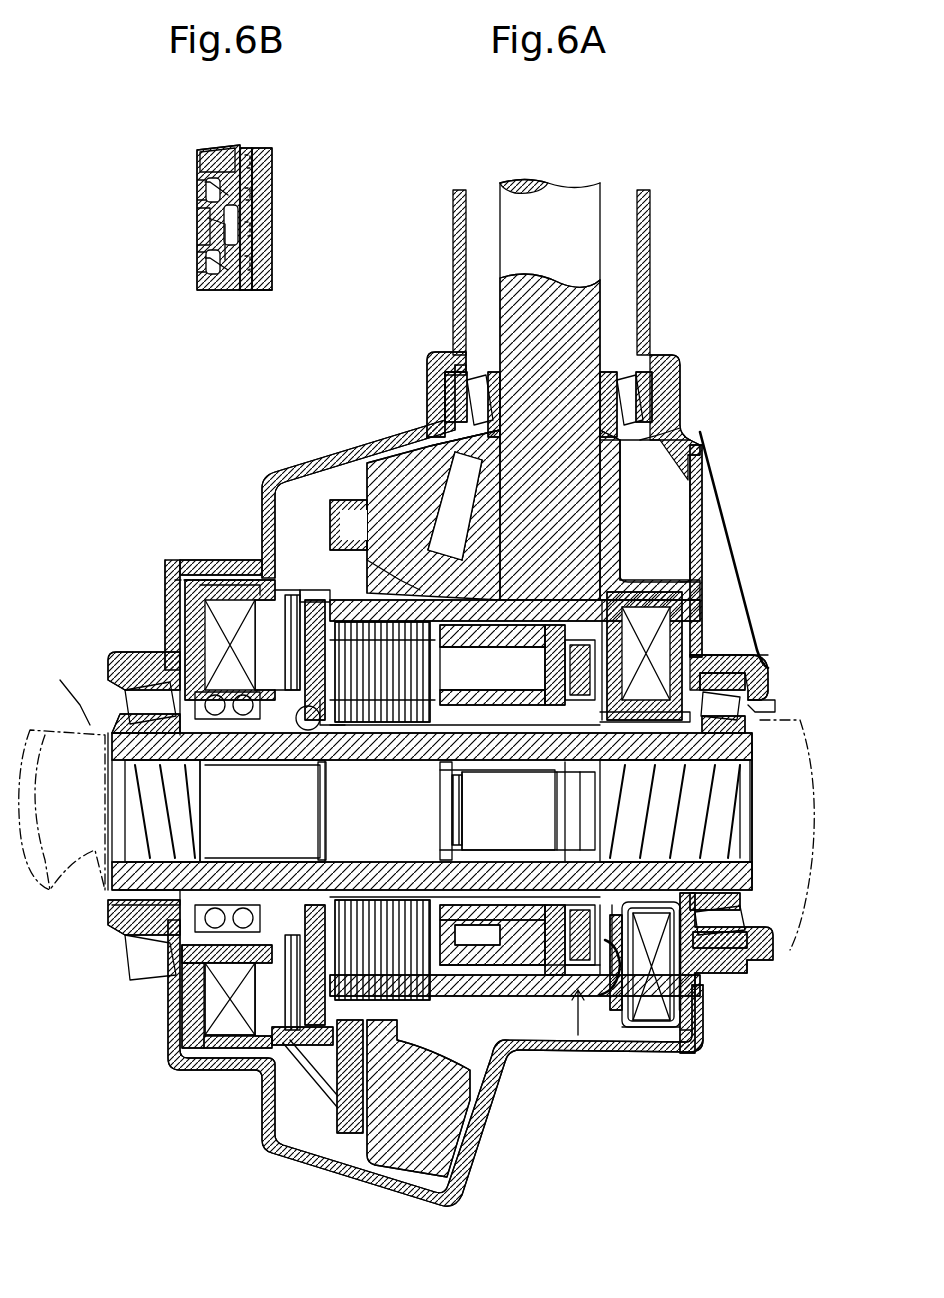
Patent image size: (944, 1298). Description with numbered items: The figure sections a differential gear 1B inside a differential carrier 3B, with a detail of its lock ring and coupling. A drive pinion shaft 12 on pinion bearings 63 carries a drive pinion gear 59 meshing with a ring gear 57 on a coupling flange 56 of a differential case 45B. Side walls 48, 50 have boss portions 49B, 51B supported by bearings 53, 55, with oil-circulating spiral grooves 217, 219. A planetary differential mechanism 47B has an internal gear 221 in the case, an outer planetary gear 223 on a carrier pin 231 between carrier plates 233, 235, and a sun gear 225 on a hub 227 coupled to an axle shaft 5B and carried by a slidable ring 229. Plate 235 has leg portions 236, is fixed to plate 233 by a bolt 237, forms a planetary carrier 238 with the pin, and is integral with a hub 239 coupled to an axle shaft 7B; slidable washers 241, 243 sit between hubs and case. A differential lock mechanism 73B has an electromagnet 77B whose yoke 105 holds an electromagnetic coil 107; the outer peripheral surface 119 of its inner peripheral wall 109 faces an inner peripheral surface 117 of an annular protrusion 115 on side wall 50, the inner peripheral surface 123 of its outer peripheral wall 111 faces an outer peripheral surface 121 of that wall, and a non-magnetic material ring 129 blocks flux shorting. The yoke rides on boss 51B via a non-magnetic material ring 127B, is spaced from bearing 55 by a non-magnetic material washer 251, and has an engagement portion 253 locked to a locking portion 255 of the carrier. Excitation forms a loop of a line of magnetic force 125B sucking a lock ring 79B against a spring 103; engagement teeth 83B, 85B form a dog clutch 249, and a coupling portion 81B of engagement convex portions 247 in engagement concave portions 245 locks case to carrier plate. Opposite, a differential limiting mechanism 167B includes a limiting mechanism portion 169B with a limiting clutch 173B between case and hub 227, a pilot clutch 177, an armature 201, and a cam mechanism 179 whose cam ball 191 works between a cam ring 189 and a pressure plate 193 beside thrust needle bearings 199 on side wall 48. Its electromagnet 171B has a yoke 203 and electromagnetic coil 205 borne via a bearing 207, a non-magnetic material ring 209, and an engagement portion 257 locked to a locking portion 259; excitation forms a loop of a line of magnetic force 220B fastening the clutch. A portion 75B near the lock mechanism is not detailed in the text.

In FIG. 6A, the differential gear 1B is at (700, 445).
In FIG. 6A, the differential carrier 3B is at (692, 357).
In FIG. 6A, the axle shaft 5B is at (90, 725).
In FIG. 6A, the axle shaft 7B is at (775, 725).
In FIG. 6A, the drive pinion shaft 12 is at (583, 228).
In FIG. 6B, the differential case 45B is at (272, 225).
In FIG. 6A, the differential case 45B is at (540, 600).
In FIG. 6A, the differential mechanism 47B is at (595, 600).
In FIG. 6A, the side wall 48 is at (185, 610).
In FIG. 6A, the boss portion 49B is at (108, 733).
In FIG. 6A, the side wall 50 is at (705, 485).
In FIG. 6A, the boss portion 51B is at (760, 735).
In FIG. 6A, the bearing 53 is at (125, 655).
In FIG. 6A, the bearing 55 is at (757, 667).
In FIG. 6A, the coupling flange 56 is at (350, 450).
In FIG. 6A, the ring gear 57 is at (370, 465).
In FIG. 6A, the drive pinion gear 59 is at (455, 460).
In FIG. 6A, the pinion bearings 63 is at (658, 360).
In FIG. 6A, the differential lock mechanism 73B is at (612, 1050).
In FIG. 6A, the lower housing portion 75B is at (700, 1060).
In FIG. 6A, the electromagnet 77B is at (690, 605).
In FIG. 6B, the lock ring 79B is at (255, 150).
In FIG. 6A, the lock ring 79B is at (755, 745).
In FIG. 6B, the coupling portion 81B is at (205, 148).
In FIG. 6A, the coupling portion 81B is at (565, 1000).
In FIG. 6B, the engagement teeth 83B is at (250, 292).
In FIG. 6B, the engagement teeth 85B is at (265, 292).
In FIG. 6A, the spring 103 is at (745, 770).
In FIG. 6A, the yoke 105 is at (680, 627).
In FIG. 6A, the electromagnetic coil 107 is at (680, 643).
In FIG. 6A, the inner peripheral wall 109 is at (740, 685).
In FIG. 6A, the outer peripheral wall 111 is at (700, 470).
In FIG. 6A, the protrusion 115 is at (774, 945).
In FIG. 6A, the inner peripheral surface 117 is at (752, 878).
In FIG. 6A, the outer peripheral surface 119 is at (750, 968).
In FIG. 6A, the outer peripheral surface 121 is at (645, 1035).
In FIG. 6A, the inner peripheral surface 123 is at (670, 1035).
In FIG. 6A, the loop of a line of magnetic force 125B is at (682, 1000).
In FIG. 6A, the non-magnetic material ring 127B is at (748, 912).
In FIG. 6A, the non-magnetic material ring 129 is at (715, 990).
In FIG. 6A, the differential limiting mechanism 167B is at (310, 640).
In FIG. 6A, the limiting mechanism portion 169B is at (325, 600).
In FIG. 6A, the electromagnet 171B is at (225, 620).
In FIG. 6A, the limiting clutch 173B is at (382, 525).
In FIG. 6A, the pilot clutch 177 is at (285, 580).
In FIG. 6A, the cam mechanism 179 is at (310, 722).
In FIG. 6A, the cam ring 189 is at (295, 811).
In FIG. 6A, the cam ball 191 is at (452, 811).
In FIG. 6A, the pressure plate 193 is at (445, 780).
In FIG. 6A, the thrust needle bearings 199 is at (262, 811).
In FIG. 6A, the armature 201 is at (310, 585).
In FIG. 6A, the yoke 203 is at (240, 580).
In FIG. 6A, the electromagnetic coil 205 is at (235, 600).
In FIG. 6A, the bearing 207 is at (200, 690).
In FIG. 6A, the non-magnetic material ring 209 is at (255, 1040).
In FIG. 6A, the spiral groove 217 is at (108, 880).
In FIG. 6A, the spiral groove 219 is at (760, 856).
In FIG. 6A, the loop of a line of magnetic force 220B is at (290, 600).
In FIG. 6A, the internal gear 221 is at (625, 595).
In FIG. 6A, the outer planetary gear 223 is at (491, 814).
In FIG. 6A, the sun gear 225 is at (509, 811).
In FIG. 6A, the hub 227 is at (450, 722).
In FIG. 6A, the slidable ring 229 is at (262, 811).
In FIG. 6A, the carrier pin 231 is at (508, 600).
In FIG. 6A, the carrier plate 233 is at (372, 590).
In FIG. 6B, the carrier plate 235 is at (205, 160).
In FIG. 6A, the carrier plate 235 is at (492, 665).
In FIG. 6A, the leg portions 236 is at (525, 1050).
In FIG. 6A, the bolt 237 is at (447, 1130).
In FIG. 6A, the planetary carrier 238 is at (462, 455).
In FIG. 6A, the hub 239 is at (558, 811).
In FIG. 6A, the slidable washer 241 is at (551, 809).
In FIG. 6A, the slidable washer 243 is at (545, 812).
In FIG. 6B, the engagement concave portions 245 is at (205, 255).
In FIG. 6B, the engagement convex portions 247 is at (205, 192).
In FIG. 6B, the dog clutch 249 is at (258, 172).
In FIG. 6A, the dog clutch 249 is at (605, 1000).
In FIG. 6A, the non-magnetic material washer 251 is at (702, 676).
In FIG. 6A, the engagement portion 253 is at (705, 1045).
In FIG. 6A, the locking portion 255 is at (705, 1050).
In FIG. 6A, the engagement portion 257 is at (170, 1025).
In FIG. 6A, the locking portion 259 is at (205, 1060).